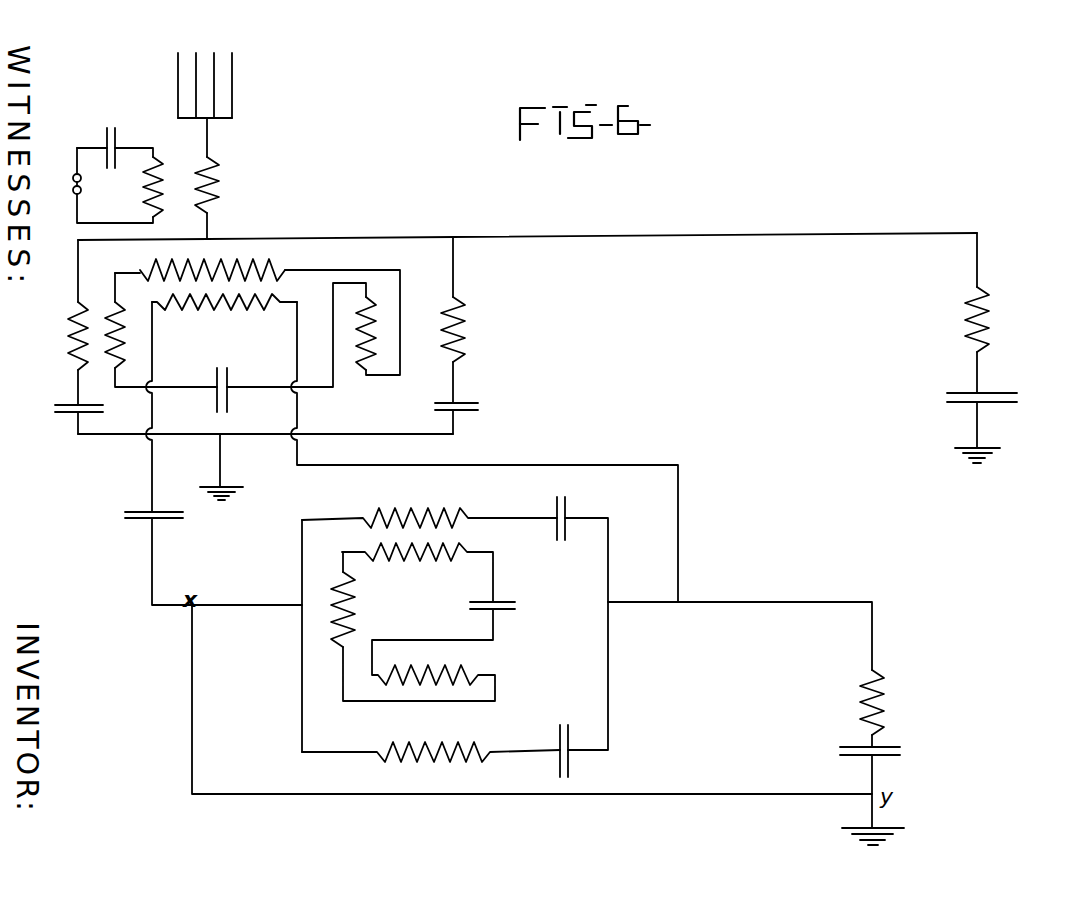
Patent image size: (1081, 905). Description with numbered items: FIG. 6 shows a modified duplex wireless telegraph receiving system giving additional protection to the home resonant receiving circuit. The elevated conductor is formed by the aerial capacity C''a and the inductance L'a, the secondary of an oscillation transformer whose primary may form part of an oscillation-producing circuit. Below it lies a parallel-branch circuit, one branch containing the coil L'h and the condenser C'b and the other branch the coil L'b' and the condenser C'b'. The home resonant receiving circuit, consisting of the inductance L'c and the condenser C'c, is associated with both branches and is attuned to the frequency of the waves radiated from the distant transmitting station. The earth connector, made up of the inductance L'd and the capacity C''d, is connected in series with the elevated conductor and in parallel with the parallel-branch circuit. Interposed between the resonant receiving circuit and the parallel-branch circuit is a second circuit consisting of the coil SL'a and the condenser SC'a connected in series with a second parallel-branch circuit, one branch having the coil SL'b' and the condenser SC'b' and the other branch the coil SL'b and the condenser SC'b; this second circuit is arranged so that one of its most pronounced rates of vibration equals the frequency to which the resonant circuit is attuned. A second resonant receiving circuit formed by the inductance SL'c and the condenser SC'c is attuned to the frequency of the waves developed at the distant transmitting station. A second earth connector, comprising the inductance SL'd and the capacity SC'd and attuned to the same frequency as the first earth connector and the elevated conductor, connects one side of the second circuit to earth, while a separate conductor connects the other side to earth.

The elevated conductor capacity C''a is at (237, 85).
The secondary of oscillation transformer L'a is at (236, 185).
The resonant receiving circuit inductance L'c is at (225, 262).
The parallel-branch circuit coil L'h is at (53, 336).
The parallel-branch circuit condenser C'b is at (51, 404).
The coil of second circuit SL'a is at (224, 321).
The resonant receiving circuit condenser C'c is at (199, 397).
The parallel-branch circuit coil L'b' is at (481, 329).
The parallel-branch circuit condenser C'b' is at (483, 404).
The earth connector inductance L'd is at (1000, 319).
The earth connector capacity C''d is at (1008, 410).
The condenser of second circuit SC'a is at (116, 520).
The coil of second parallel-branch circuit SL'b' is at (429, 501).
The condenser of second parallel-branch circuit SC'b' is at (597, 507).
The second resonant receiving circuit inductance SL'c is at (374, 609).
The second resonant receiving circuit condenser SC'c is at (517, 623).
The second earth connector inductance SL'd is at (904, 702).
The second earth connector capacity SC'd is at (905, 754).
The coil of second parallel-branch circuit SL'b is at (431, 766).
The condenser of second parallel-branch circuit SC'b is at (617, 752).